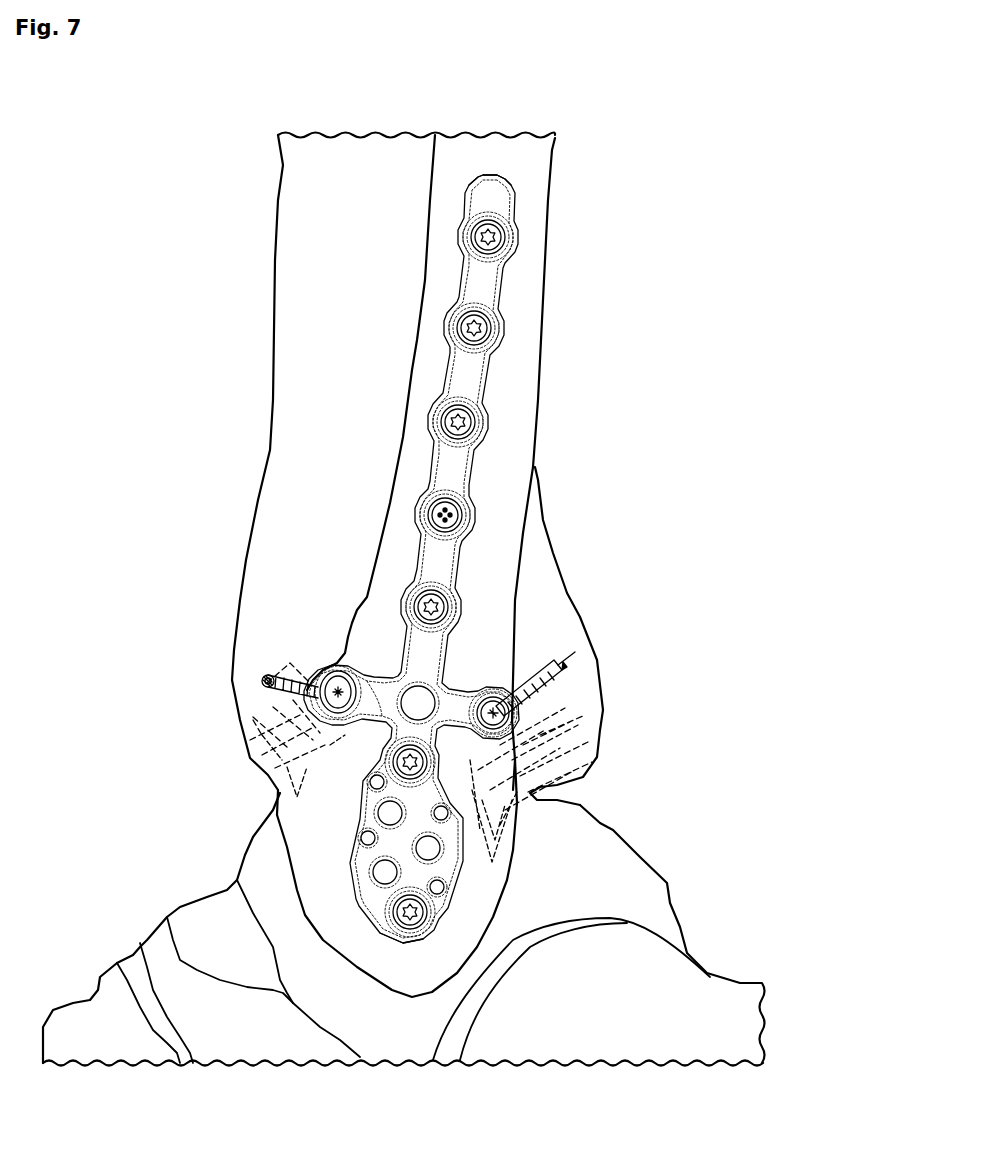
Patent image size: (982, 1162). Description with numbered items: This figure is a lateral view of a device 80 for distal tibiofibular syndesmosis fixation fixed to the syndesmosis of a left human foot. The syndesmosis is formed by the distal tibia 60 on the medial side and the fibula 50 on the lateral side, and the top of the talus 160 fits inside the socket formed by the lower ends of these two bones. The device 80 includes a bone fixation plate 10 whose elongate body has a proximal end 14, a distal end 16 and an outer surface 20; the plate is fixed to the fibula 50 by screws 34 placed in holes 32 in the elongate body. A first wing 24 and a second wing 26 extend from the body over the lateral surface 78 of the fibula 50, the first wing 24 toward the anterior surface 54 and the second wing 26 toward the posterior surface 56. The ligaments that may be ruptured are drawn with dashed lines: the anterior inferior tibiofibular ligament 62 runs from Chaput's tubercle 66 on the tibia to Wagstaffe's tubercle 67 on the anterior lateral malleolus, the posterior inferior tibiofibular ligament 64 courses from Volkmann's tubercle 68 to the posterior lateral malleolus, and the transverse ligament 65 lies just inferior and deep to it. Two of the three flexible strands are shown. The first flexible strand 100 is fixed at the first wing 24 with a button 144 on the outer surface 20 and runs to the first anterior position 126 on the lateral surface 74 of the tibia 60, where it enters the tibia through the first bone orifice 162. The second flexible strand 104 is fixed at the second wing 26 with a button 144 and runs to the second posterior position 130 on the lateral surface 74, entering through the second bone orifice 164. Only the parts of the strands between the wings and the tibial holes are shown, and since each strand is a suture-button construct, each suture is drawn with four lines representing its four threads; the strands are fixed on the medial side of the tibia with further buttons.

The bone fixation plate 10 is at (468, 567).
The proximal end 14 is at (492, 175).
The distal end 16 is at (400, 947).
The outer surface 20 is at (483, 283).
The first wing 24 is at (362, 690).
The second wing 26 is at (462, 695).
The holes 32 is at (388, 812).
The screws 34 is at (498, 233).
The fibula 50 is at (518, 390).
The anterior surface 54 is at (280, 853).
The posterior surface 56 is at (522, 877).
The tibia 60 is at (287, 453).
The anterior inferior tibiofibular ligament 62 is at (285, 734).
The posterior inferior tibiofibular ligament 64 is at (580, 708).
The transverse ligament 65 is at (583, 740).
The Chaput's tubercle 66 is at (285, 692).
The Wagstaffe's tubercle 67 is at (290, 752).
The Volkmann's tubercle 68 is at (583, 693).
The lateral surface 74 is at (287, 492).
The lateral surface 78 is at (507, 481).
The device for distal tibiofibular syndesmosis fixation 80 is at (674, 385).
The first flexible strand 100 is at (310, 672).
The second flexible strand 104 is at (523, 698).
The first anterior position 126 is at (273, 672).
The second posterior position 130 is at (558, 655).
The button 144 is at (455, 515).
The talus 160 is at (635, 883).
The first bone orifice 162 is at (260, 678).
The second bone orifice 164 is at (575, 660).